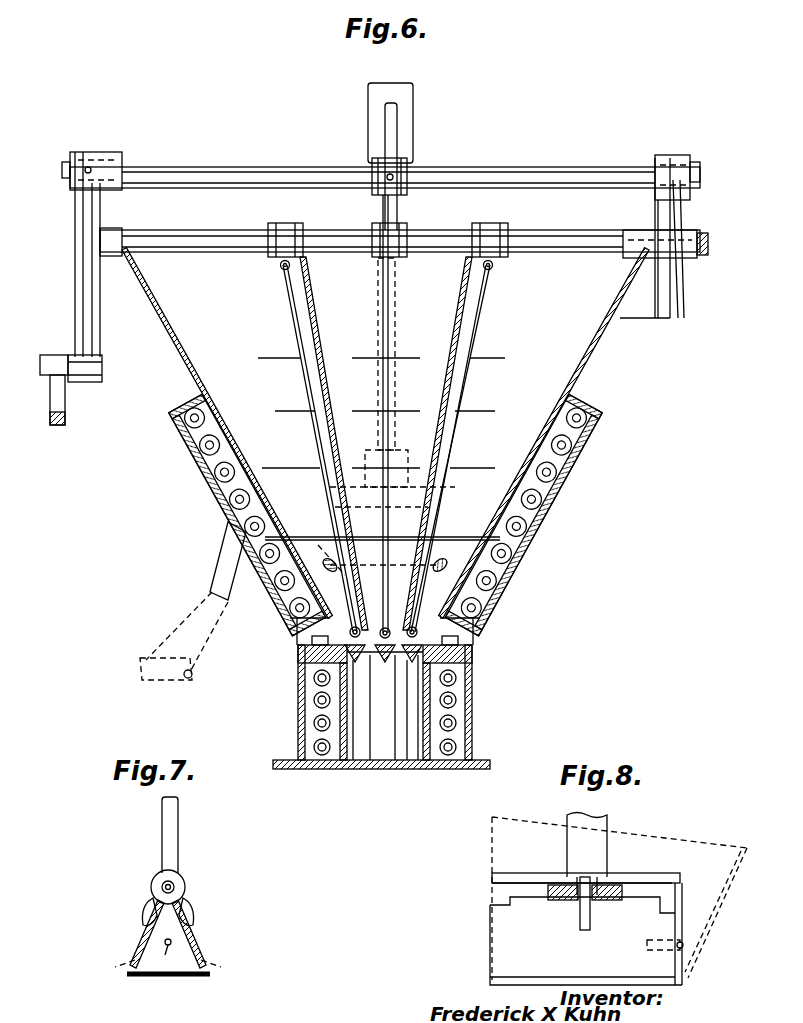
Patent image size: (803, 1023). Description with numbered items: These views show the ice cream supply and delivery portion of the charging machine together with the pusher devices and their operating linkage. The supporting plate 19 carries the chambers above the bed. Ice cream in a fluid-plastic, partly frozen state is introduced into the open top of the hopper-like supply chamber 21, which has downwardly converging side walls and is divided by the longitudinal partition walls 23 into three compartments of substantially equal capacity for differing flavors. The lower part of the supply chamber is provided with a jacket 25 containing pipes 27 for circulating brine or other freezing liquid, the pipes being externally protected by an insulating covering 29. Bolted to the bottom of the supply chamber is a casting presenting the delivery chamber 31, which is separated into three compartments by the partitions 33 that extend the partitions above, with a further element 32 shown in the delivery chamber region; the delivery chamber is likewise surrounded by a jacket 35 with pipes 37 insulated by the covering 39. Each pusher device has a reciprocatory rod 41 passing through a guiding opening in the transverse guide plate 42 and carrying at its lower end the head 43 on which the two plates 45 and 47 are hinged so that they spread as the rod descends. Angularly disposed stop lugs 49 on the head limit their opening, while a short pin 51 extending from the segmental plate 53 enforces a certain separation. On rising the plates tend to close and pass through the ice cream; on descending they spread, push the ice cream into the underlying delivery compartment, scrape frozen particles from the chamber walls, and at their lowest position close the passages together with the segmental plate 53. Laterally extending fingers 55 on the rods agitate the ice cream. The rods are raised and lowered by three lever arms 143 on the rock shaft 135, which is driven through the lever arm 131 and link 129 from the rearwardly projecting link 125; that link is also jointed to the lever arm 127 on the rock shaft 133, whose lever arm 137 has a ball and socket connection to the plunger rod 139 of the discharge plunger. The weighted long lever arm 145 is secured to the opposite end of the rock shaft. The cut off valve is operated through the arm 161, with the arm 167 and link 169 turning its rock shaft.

In FIG. 6, the supporting plate 19 is at (322, 769).
In FIG. 6, the supply chamber 21 is at (183, 372).
In FIG. 8, the supply chamber 21 is at (490, 840).
In FIG. 6, the longitudinal partition walls 23 is at (310, 292).
In FIG. 6, the jacket 25 is at (185, 425).
In FIG. 6, the pipes 27 is at (212, 462).
In FIG. 6, the insulating covering 29 is at (218, 493).
In FIG. 6, the delivery chamber 31 is at (419, 769).
In FIG. 6, the blade 32 is at (354, 770).
In FIG. 6, the partitions 33 is at (384, 768).
In FIG. 6, the jacket 35 is at (314, 745).
In FIG. 6, the pipes 37 is at (300, 688).
In FIG. 6, the covering 39 is at (314, 705).
In FIG. 6, the reciprocatory rod 41 is at (390, 330).
In FIG. 7, the reciprocatory rod 41 is at (178, 832).
In FIG. 8, the reciprocatory rod 41 is at (607, 821).
In FIG. 6, the guide plate 42 is at (456, 537).
In FIG. 6, the head 43 is at (300, 628).
In FIG. 7, the head 43 is at (178, 886).
In FIG. 8, the head 43 is at (540, 873).
In FIG. 7, the hinged plate 45 is at (198, 950).
In FIG. 8, the hinged plate 45 is at (500, 940).
In FIG. 7, the hinged plate 47 is at (140, 950).
In FIG. 8, the hinged plate 47 is at (610, 882).
In FIG. 7, the stop lugs 49 is at (148, 910).
In FIG. 8, the stop lugs 49 is at (586, 913).
In FIG. 7, the short pin 51 is at (166, 946).
In FIG. 8, the short pin 51 is at (658, 950).
In FIG. 7, the segmental plate 53 is at (176, 977).
In FIG. 8, the segmental plate 53 is at (682, 918).
In FIG. 6, the fingers 55 is at (272, 358).
In FIG. 6, the link 125 is at (52, 408).
In FIG. 6, the lever arm 127 is at (75, 312).
In FIG. 6, the link 129 is at (86, 382).
In FIG. 6, the lever arm 131 is at (101, 340).
In FIG. 6, the rock shaft 133 is at (276, 172).
In FIG. 6, the rock shaft 135 is at (197, 243).
In FIG. 6, the lever arm 137 is at (393, 137).
In FIG. 6, the plunger rod 139 is at (393, 305).
In FIG. 6, the lever arms 143 is at (290, 226).
In FIG. 6, the long lever arm 145 is at (708, 250).
In FIG. 6, the arm 161 is at (318, 545).
In FIG. 6, the arm 167 is at (222, 563).
In FIG. 6, the link 169 is at (150, 658).